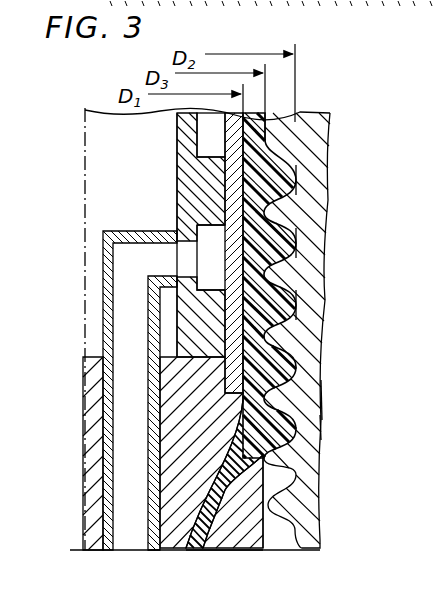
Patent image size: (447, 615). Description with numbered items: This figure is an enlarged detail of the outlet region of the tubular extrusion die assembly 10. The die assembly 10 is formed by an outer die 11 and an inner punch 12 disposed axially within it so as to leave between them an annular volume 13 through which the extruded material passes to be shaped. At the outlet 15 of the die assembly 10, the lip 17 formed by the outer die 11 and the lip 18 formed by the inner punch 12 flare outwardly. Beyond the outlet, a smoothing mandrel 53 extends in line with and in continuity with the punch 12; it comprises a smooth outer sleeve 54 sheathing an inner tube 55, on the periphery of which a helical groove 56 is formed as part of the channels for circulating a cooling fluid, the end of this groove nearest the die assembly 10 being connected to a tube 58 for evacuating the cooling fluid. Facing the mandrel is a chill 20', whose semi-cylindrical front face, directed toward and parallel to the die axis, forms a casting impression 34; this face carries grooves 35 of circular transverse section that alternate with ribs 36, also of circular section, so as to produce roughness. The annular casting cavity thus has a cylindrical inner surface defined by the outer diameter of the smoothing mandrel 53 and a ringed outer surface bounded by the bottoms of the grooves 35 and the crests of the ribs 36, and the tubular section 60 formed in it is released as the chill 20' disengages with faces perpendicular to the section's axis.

The tubular extrusion die assembly 10 is at (217, 551).
The outer die 11 is at (243, 535).
The inner punch 12 is at (160, 551).
The annular volume 13 is at (178, 548).
The outlet 15 is at (318, 432).
The lip of the outer die 17 is at (237, 470).
The lip of the inner punch 18 is at (178, 410).
The chill 20' is at (348, 391).
The casting impression 34 is at (284, 302).
The grooves 35 is at (294, 180).
The ribs 36 is at (236, 198).
The smoothing mandrel 53 is at (176, 147).
The smooth outer sleeve 54 is at (233, 163).
The inner tube 55 is at (190, 210).
The helical groove 56 is at (200, 132).
The tube for evacuating cooling fluid 58 is at (138, 532).
The tubular section 60 is at (328, 124).